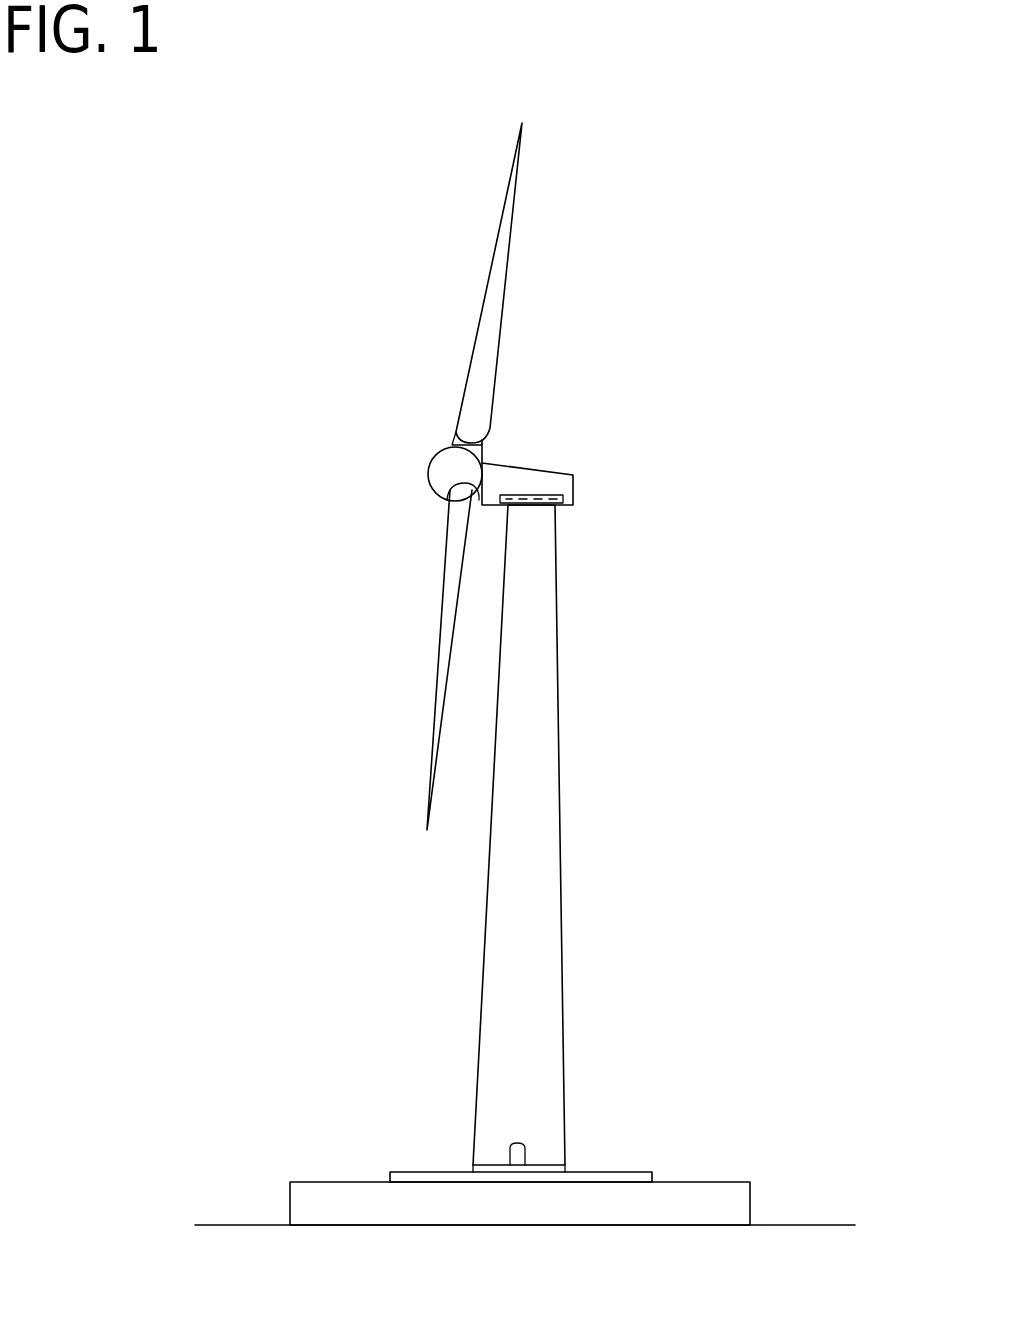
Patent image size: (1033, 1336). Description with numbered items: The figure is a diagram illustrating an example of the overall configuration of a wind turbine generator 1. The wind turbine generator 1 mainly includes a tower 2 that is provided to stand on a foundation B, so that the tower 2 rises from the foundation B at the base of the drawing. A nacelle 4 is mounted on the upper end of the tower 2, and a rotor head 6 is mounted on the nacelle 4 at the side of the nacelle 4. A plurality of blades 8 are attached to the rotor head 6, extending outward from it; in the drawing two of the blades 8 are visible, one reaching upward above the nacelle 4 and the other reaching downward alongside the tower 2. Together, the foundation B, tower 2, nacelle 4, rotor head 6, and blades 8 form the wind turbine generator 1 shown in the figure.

The wind turbine generator 1 is at (650, 190).
The tower 2 is at (560, 855).
The nacelle 4 is at (531, 435).
The rotor head 6 is at (440, 468).
The blades 8 is at (505, 276).
The foundation B is at (713, 1181).